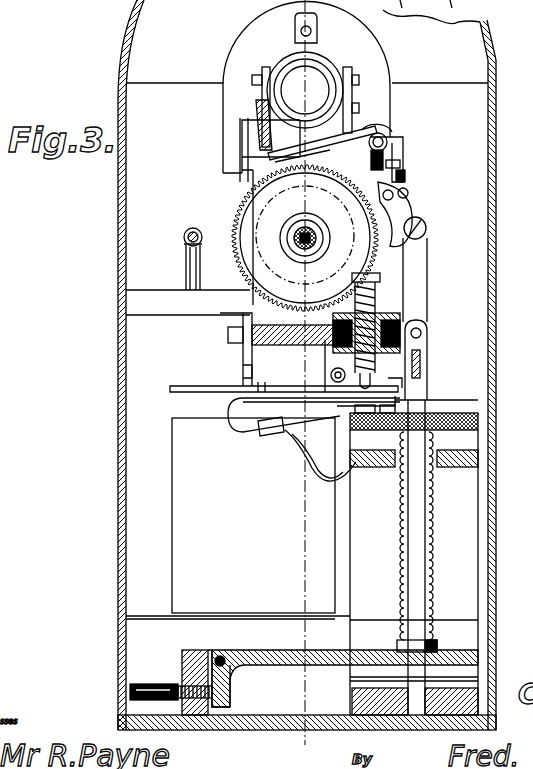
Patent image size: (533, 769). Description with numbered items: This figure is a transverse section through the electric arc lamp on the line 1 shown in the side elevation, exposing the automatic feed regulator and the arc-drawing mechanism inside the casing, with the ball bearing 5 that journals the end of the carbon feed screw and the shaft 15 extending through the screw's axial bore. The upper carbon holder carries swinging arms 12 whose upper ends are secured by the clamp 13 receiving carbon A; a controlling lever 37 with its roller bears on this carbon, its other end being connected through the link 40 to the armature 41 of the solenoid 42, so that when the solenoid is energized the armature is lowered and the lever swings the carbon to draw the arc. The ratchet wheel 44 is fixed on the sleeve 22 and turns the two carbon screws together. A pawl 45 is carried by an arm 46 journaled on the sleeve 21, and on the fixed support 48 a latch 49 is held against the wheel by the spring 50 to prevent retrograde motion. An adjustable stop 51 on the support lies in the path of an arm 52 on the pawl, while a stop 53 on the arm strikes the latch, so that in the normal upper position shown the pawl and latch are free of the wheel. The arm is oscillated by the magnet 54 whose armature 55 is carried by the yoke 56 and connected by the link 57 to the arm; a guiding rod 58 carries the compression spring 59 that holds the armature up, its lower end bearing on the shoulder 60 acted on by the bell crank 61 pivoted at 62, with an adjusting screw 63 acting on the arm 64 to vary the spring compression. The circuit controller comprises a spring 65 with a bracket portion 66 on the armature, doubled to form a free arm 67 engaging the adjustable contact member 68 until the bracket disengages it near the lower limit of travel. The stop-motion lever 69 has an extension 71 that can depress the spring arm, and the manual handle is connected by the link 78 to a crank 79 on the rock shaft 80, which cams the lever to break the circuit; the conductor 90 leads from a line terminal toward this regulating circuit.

The casing 1 is at (495, 535).
The ball bearing 5 is at (306, 381).
The swinging arms 12 is at (345, 128).
The clamp 13 is at (325, 68).
The shaft 15 is at (300, 253).
The sleeve 21 is at (322, 241).
The sleeve 22 is at (293, 235).
The controlling lever 37 is at (240, 134).
The link 40 is at (243, 358).
The armature 41 is at (245, 388).
The solenoid 42 is at (253, 515).
The ratchet wheel 44 is at (305, 238).
The pawl 45 is at (397, 215).
The arm 46 is at (426, 223).
The fixed support 48 is at (393, 154).
The latch 49 is at (373, 130).
The spring 50 is at (309, 154).
The adjustable stop 51 is at (400, 170).
The arm 52 is at (405, 180).
The stop 53 is at (305, 227).
The magnet 54 is at (414, 572).
The armature 55 is at (478, 422).
The yoke 56 is at (427, 358).
The link 57 is at (418, 284).
The guiding rod 58 is at (418, 597).
The compression spring 59 is at (400, 500).
The shoulder 60 is at (405, 645).
The bell crank 61 is at (252, 655).
The pivot 62 is at (222, 655).
The adjusting screw 63 is at (152, 684).
The arm 64 is at (232, 689).
The spring 65 is at (240, 426).
The bracket portion 66 is at (400, 375).
The spring arm 67 is at (310, 392).
The contact member 68 is at (346, 399).
The lever 69 is at (304, 347).
The extension 71 is at (335, 372).
The link 78 is at (184, 238).
The crank 79 is at (190, 278).
The rock shaft 80 is at (426, 13).
The conductor 90 is at (325, 478).